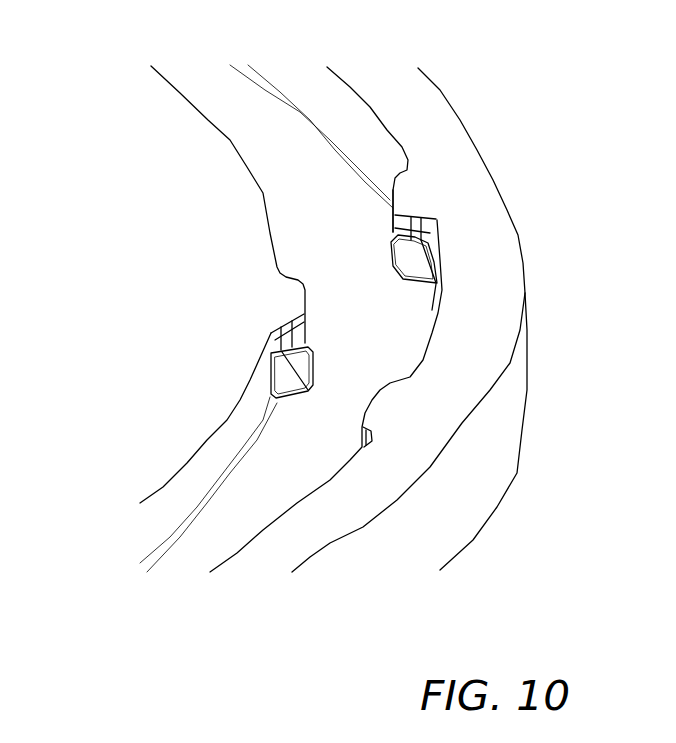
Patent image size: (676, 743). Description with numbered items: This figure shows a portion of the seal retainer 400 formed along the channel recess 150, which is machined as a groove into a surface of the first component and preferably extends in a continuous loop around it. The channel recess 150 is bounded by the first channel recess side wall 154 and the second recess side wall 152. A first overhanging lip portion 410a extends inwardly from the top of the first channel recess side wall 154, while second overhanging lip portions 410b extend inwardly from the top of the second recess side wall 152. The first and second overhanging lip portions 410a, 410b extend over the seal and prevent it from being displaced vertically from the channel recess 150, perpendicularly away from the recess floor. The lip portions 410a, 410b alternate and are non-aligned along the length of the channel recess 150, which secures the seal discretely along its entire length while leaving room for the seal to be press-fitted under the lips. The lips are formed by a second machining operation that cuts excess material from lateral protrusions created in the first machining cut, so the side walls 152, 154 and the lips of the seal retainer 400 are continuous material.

The channel recess 150 is at (352, 232).
The second recess side wall 152 is at (357, 128).
The first channel recess side wall 154 is at (205, 467).
The seal retainer 400 is at (440, 167).
The first overhanging lip portions 410a is at (287, 300).
The second overhanging lip portions 410b is at (417, 193).